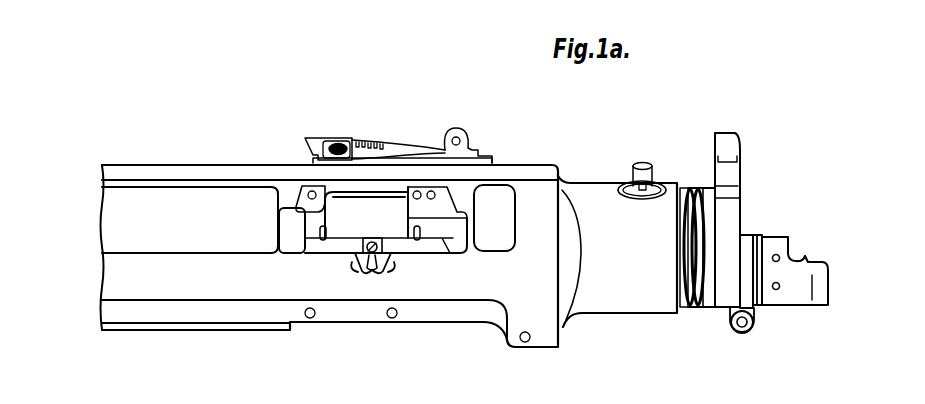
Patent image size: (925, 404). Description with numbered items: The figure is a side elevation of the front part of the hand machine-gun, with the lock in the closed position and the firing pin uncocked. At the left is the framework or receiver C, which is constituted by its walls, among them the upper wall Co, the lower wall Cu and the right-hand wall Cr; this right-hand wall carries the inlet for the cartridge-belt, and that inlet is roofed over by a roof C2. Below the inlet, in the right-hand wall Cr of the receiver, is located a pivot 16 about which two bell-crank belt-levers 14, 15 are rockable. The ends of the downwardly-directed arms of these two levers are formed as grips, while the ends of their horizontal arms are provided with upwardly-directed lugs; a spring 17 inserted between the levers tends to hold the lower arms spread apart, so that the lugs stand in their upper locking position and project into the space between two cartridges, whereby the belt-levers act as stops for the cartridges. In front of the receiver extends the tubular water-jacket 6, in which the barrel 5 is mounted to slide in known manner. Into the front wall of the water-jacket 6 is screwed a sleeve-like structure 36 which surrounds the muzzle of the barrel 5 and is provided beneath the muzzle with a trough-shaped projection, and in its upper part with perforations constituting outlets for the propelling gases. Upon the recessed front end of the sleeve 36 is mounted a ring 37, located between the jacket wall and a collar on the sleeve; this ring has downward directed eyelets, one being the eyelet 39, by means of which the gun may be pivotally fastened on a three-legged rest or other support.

The receiver C is at (110, 213).
The upper wall of receiver Co is at (184, 167).
The right-hand wall of receiver Cr is at (190, 220).
The lower wall of receiver Cu is at (160, 333).
The roof C2 is at (385, 190).
The tubular water-jacket 6 is at (597, 203).
The bell-crank belt-lever 14 is at (355, 262).
The bell-crank belt-lever 15 is at (383, 266).
The pivot 16 is at (373, 243).
The spring 17 is at (372, 265).
The ring 37 is at (748, 237).
The sleeve 36 is at (798, 288).
The barrel 5 is at (803, 259).
The eyelet 39 is at (730, 322).